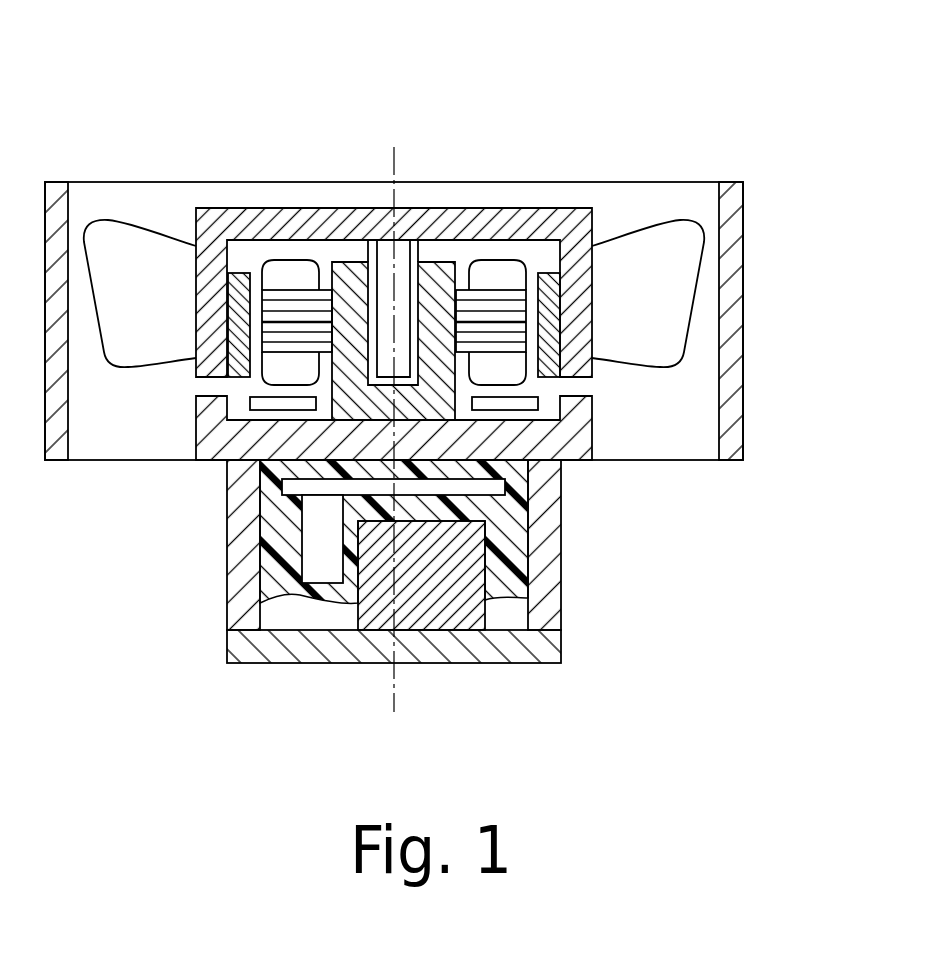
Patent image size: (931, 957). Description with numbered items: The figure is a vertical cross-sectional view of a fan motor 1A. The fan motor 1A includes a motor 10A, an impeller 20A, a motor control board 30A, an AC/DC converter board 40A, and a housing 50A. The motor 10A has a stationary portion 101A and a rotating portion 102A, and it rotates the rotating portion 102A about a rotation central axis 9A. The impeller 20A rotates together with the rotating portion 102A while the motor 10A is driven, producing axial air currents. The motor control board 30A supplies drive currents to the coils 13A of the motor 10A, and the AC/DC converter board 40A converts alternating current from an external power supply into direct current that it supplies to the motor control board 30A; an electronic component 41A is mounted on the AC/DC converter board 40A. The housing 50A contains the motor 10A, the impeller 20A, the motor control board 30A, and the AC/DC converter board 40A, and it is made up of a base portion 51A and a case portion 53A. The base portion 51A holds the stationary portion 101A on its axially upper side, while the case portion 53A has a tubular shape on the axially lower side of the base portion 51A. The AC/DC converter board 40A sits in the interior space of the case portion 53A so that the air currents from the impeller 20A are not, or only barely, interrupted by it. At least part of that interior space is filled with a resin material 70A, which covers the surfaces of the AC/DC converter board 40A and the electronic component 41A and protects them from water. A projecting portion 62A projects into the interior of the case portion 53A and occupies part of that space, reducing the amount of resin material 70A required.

The fan motor 1A is at (220, 99).
The rotation central axis 9A is at (393, 176).
The motor 10A is at (612, 120).
The stationary portion 101A is at (437, 295).
The rotating portion 102A is at (552, 220).
The coils 13A is at (290, 280).
The impeller 20A is at (661, 258).
The motor control board 30A is at (287, 406).
The AC/DC converter board 40A is at (323, 490).
The electronic component 41A is at (317, 565).
The housing 50A is at (765, 433).
The base portion 51A is at (523, 433).
The case portion 53A is at (545, 520).
The projecting portion 62A is at (435, 593).
The resin material 70A is at (510, 585).